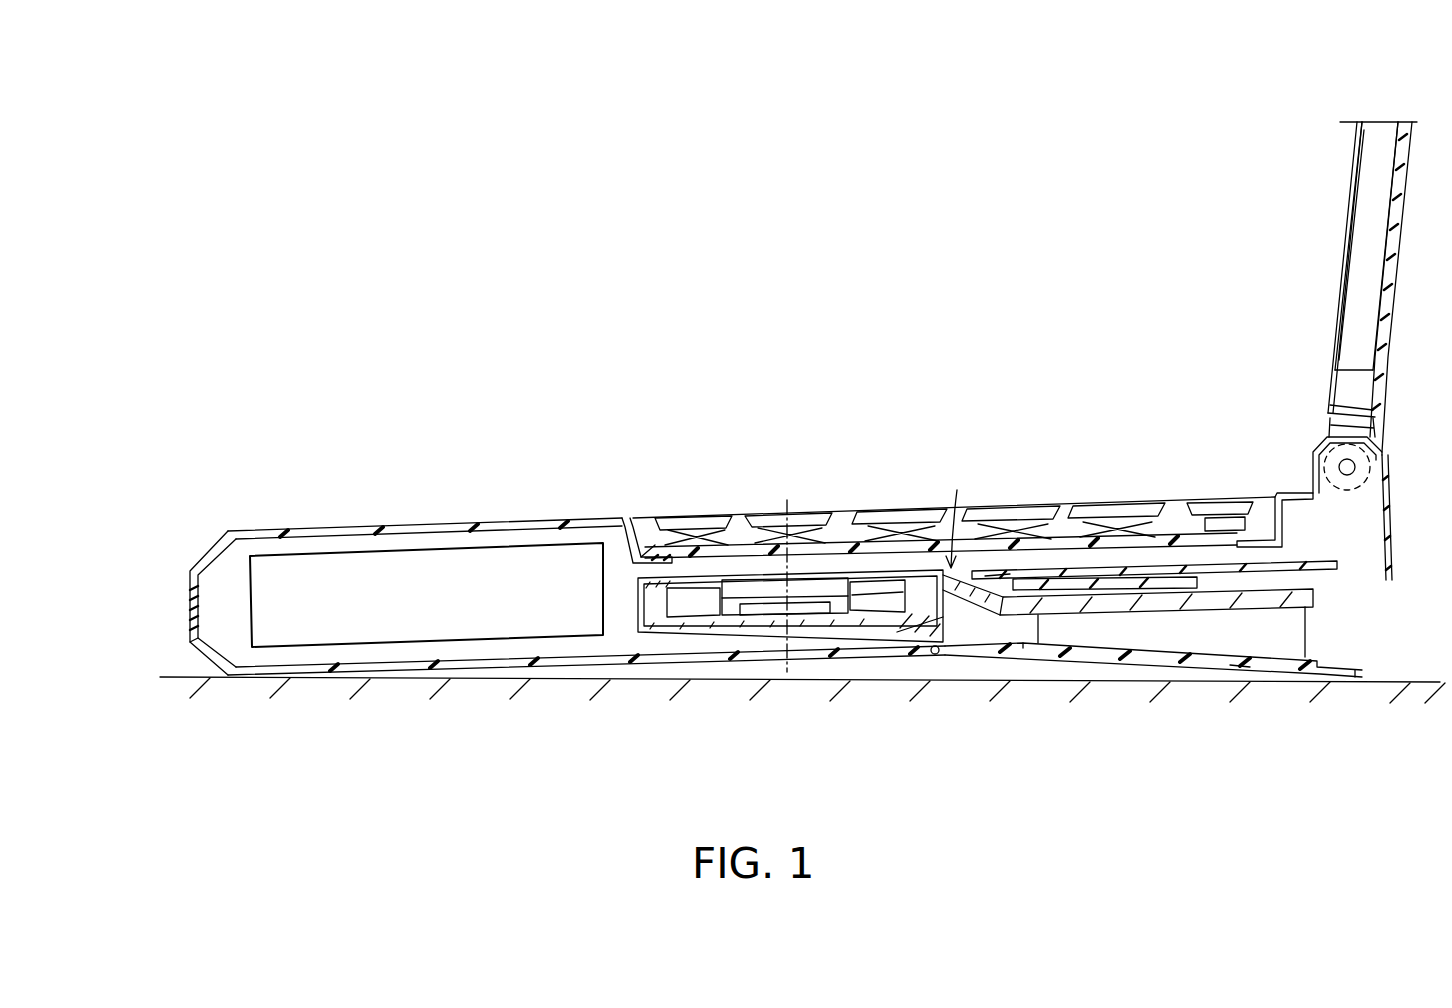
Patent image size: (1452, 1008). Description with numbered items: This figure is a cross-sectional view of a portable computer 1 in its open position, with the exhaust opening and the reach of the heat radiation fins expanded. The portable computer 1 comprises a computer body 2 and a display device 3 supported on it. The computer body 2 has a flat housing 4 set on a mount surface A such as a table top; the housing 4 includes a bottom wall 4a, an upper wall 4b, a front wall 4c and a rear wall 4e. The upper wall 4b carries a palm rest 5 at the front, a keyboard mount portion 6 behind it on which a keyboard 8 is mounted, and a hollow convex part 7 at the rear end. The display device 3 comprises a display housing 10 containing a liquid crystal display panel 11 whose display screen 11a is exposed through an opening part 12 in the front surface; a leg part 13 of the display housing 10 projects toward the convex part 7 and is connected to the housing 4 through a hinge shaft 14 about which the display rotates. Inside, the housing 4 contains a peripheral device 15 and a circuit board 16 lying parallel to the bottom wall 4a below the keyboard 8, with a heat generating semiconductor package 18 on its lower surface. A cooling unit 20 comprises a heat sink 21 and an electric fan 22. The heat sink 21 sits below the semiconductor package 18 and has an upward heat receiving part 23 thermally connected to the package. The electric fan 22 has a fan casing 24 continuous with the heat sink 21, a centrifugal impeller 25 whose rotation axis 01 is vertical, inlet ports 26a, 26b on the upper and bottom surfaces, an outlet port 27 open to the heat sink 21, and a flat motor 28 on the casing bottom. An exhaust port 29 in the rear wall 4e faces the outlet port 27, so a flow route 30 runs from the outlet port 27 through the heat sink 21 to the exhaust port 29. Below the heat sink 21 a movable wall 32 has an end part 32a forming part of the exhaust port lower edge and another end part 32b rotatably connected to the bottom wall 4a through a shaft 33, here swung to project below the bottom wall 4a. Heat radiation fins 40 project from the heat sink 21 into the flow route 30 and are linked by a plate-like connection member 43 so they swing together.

The portable computer 1 is at (391, 489).
The computer body 2 is at (215, 543).
The display device 3 is at (1355, 287).
The housing 4 is at (791, 605).
The bottom wall 4a is at (575, 658).
The upper wall 4b is at (612, 517).
The front wall 4c is at (190, 628).
The rear wall 4e is at (1392, 513).
The palm rest 5 is at (467, 520).
The keyboard mount portion 6 is at (645, 530).
The convex part 7 is at (1372, 454).
The keyboard 8 is at (898, 510).
The display housing 10 is at (1393, 272).
The liquid crystal display panel 11 is at (1378, 225).
The display screen 11a is at (1348, 252).
The opening part 12 is at (1335, 355).
The leg part 13 is at (1330, 428).
The hinge shaft 14 is at (1356, 467).
The peripheral device 15 is at (412, 628).
The circuit board 16 is at (1138, 570).
The semiconductor package 18 is at (1060, 578).
The cooling unit 20 is at (963, 515).
The heat sink 21 is at (1290, 596).
The electric fan 22 is at (748, 610).
The heat receiving part 23 is at (1100, 590).
The fan casing 24 is at (835, 626).
The centrifugal impeller 25 is at (812, 590).
The inlet port 26a is at (705, 570).
The inlet port 26b is at (702, 627).
The outlet port 27 is at (957, 620).
The flat motor 28 is at (772, 622).
The exhaust port 29 is at (1385, 605).
The flow route 30 is at (1012, 640).
The movable wall 32 is at (1133, 711).
The end part 32a is at (1355, 677).
The other end part 32b is at (936, 663).
The shaft 33 is at (920, 660).
The heat radiation fins 40 is at (1125, 640).
The connection member 43 is at (1240, 663).
The rotation axis 01 is at (772, 569).
The mount surface A is at (802, 668).